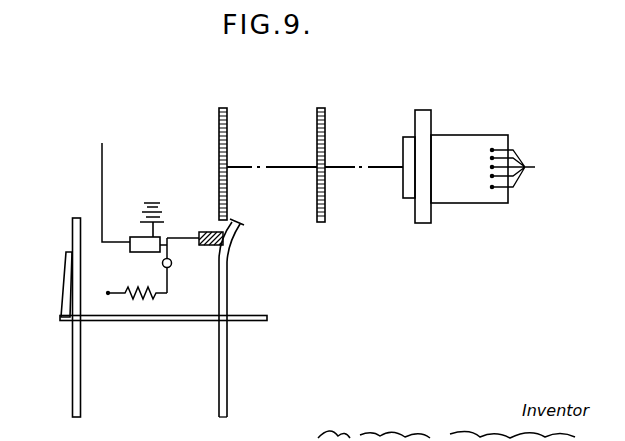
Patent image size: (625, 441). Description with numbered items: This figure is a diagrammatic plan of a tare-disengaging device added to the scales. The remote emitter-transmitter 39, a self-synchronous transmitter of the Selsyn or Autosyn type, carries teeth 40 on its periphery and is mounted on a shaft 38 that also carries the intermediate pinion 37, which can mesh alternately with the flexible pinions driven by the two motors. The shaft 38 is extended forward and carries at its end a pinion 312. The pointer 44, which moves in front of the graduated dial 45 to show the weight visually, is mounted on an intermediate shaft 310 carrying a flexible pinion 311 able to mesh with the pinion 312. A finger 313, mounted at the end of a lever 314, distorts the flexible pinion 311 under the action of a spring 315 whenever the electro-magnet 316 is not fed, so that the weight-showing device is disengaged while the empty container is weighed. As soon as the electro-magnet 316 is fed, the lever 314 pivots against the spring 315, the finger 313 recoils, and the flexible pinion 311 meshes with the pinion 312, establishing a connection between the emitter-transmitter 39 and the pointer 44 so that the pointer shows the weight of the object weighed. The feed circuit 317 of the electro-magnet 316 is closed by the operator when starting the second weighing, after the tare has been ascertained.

The intermediate pinion 37 is at (325, 141).
The shaft 38 is at (275, 167).
The remote emitter-transmitter 39 is at (469, 190).
The teeth 40 is at (431, 118).
The pointer 44 is at (62, 275).
The dial 45 is at (72, 224).
The intermediate shaft 310 is at (130, 322).
The flexible pinion 311 is at (227, 378).
The pinion 312 is at (219, 155).
The finger 313 is at (206, 232).
The lever 314 is at (172, 263).
The spring 315 is at (131, 290).
The electro-magnet 316 is at (141, 240).
The feed circuit 317 is at (102, 192).